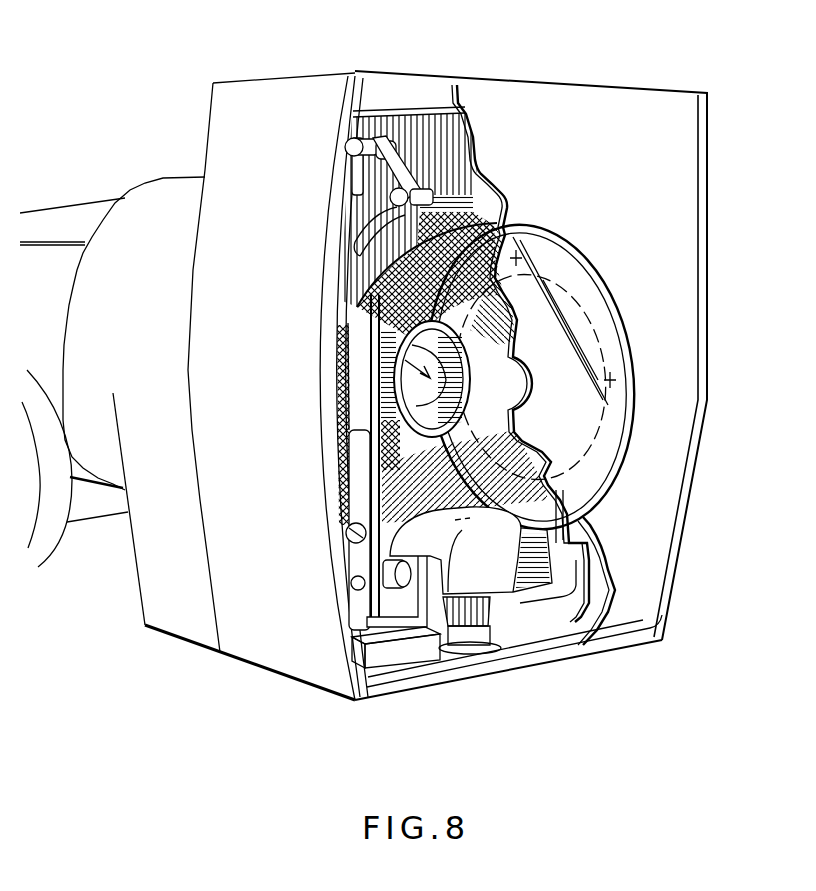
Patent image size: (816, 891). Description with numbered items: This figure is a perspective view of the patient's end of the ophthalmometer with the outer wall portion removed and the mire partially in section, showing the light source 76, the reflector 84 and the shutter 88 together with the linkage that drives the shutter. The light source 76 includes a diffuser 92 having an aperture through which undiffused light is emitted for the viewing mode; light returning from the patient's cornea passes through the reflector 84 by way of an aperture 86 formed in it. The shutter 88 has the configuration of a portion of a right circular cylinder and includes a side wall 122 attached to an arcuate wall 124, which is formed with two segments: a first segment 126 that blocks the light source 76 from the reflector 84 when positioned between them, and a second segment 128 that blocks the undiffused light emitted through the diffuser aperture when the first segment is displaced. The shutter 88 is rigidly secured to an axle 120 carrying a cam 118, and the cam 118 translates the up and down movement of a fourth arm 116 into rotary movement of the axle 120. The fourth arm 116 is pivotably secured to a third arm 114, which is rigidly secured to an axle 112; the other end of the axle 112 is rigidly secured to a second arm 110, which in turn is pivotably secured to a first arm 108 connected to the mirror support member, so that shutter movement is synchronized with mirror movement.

The light source 76 is at (513, 615).
The reflector 84 is at (606, 280).
The aperture 86 is at (388, 415).
The shutter 88 is at (525, 600).
The diffuser 92 is at (506, 572).
The first arm 108 is at (372, 226).
The second arm 110 is at (400, 170).
The axle 112 is at (397, 172).
The third arm 114 is at (383, 142).
The fourth arm 116 is at (343, 305).
The cam 118 is at (363, 558).
The axle 120 is at (355, 584).
The side wall 122 is at (422, 559).
The arcuate wall 124 is at (555, 476).
The first segment 126 is at (524, 492).
The second segment 128 is at (525, 583).